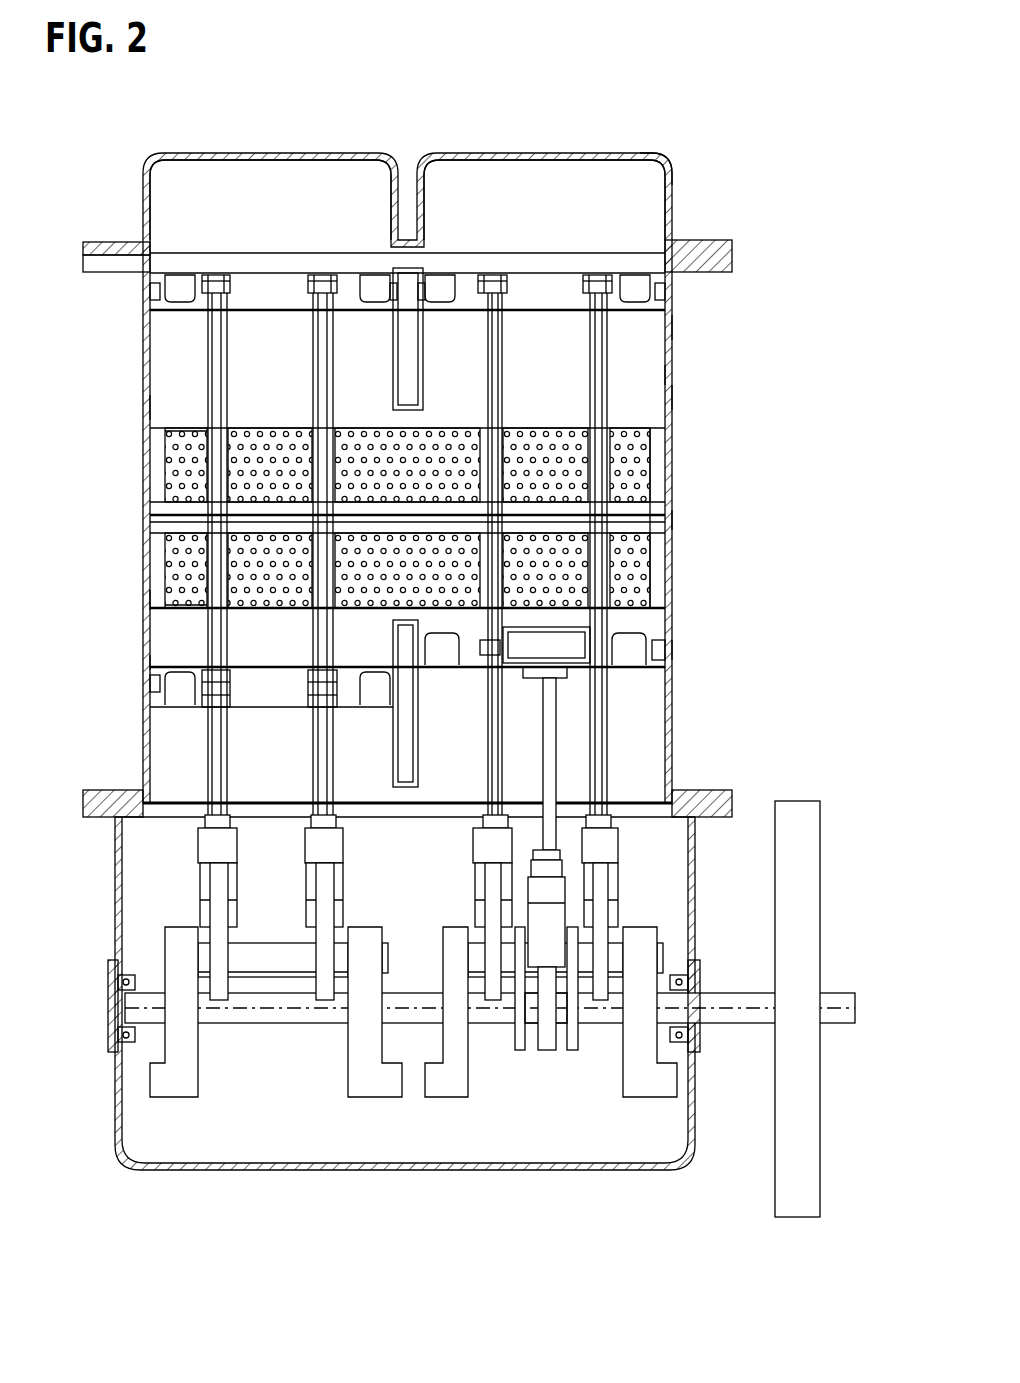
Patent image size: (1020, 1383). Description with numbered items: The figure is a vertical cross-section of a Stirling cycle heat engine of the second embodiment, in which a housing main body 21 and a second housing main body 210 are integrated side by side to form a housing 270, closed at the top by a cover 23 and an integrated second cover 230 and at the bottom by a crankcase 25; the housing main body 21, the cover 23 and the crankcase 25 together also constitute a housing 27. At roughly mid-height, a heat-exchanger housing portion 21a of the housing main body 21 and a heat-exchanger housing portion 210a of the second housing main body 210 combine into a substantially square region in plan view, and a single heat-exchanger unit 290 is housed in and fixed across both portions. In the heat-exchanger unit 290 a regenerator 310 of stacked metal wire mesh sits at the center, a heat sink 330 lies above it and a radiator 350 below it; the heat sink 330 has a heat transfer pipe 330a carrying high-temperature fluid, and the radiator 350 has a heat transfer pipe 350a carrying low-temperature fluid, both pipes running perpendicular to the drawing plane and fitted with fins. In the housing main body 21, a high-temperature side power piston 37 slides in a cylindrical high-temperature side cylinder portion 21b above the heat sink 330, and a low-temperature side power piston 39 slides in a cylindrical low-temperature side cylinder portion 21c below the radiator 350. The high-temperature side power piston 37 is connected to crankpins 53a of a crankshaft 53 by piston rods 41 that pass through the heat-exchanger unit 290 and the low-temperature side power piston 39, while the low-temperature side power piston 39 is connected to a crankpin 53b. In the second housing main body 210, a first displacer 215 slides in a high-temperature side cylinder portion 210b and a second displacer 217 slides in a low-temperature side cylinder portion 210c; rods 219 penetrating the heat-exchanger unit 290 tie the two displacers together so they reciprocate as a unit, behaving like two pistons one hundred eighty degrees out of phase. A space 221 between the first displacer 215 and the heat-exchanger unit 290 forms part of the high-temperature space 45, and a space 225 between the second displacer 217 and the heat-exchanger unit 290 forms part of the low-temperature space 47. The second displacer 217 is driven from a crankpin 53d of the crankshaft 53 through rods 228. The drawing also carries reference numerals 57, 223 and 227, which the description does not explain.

The housing main body 21 is at (770, 457).
The heat-exchanger housing portion 21a is at (675, 520).
The high-temperature side cylinder portion 21b is at (672, 398).
The low-temperature side cylinder portion 21c is at (672, 650).
The cover 23 is at (545, 150).
The crankcase 25 is at (548, 1170).
The housing 27 is at (675, 325).
The high-temperature side power piston 37 is at (628, 290).
The low-temperature side power piston 39 is at (668, 682).
The piston rods 41 is at (600, 342).
The high-temperature space 45 is at (655, 372).
The low-temperature space 47 is at (630, 620).
The crankshaft 53 is at (370, 1095).
The crankpins 53a is at (475, 960).
The crankpin 53b is at (560, 1018).
The crankpin 53d is at (275, 967).
The central connecting rod 57 is at (540, 765).
The second housing main body 210 is at (62, 617).
The heat-exchanger housing portion 210a is at (146, 598).
The high-temperature side cylinder portion 210b is at (143, 397).
The low-temperature side cylinder portion 210c is at (142, 662).
The first displacer 215 is at (182, 314).
The second displacer 217 is at (180, 708).
The rods 219 is at (323, 338).
The space 221 is at (172, 328).
The upper partition wall 223 is at (420, 408).
The space 225 is at (190, 650).
The lower partition wall 227 is at (393, 620).
The rods 228 is at (323, 737).
The second cover 230 is at (290, 150).
The housing 270 is at (649, 152).
The heat-exchanger unit 290 is at (82, 463).
The regenerator 310 is at (172, 510).
The heat sink 330 is at (168, 470).
The heat transfer pipe 330a is at (168, 432).
The radiator 350 is at (168, 548).
The heat transfer pipe 350a is at (168, 592).